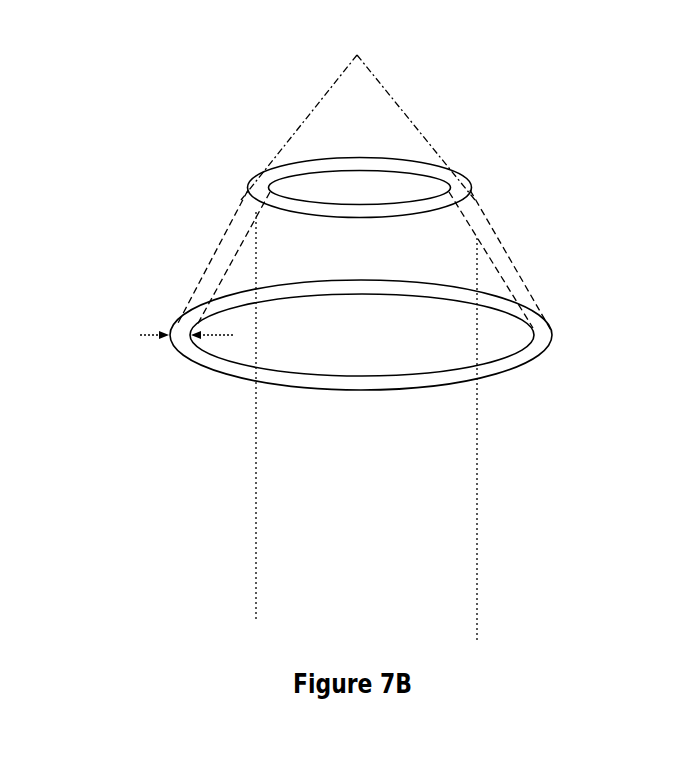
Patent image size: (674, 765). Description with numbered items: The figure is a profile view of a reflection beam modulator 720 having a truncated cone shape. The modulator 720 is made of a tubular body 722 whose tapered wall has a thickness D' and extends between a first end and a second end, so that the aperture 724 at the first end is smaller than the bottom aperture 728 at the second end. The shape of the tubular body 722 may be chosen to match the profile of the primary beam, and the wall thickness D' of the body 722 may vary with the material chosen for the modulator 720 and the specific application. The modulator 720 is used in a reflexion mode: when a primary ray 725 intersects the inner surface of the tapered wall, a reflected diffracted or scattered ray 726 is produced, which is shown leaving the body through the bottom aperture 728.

The reflection beam modulator 720 is at (156, 510).
The tubular body 722 is at (528, 292).
The aperture 724 is at (407, 187).
The primary ray 725 is at (407, 128).
The reflected diffracted ray 726 is at (487, 500).
The bottom aperture 728 is at (492, 345).